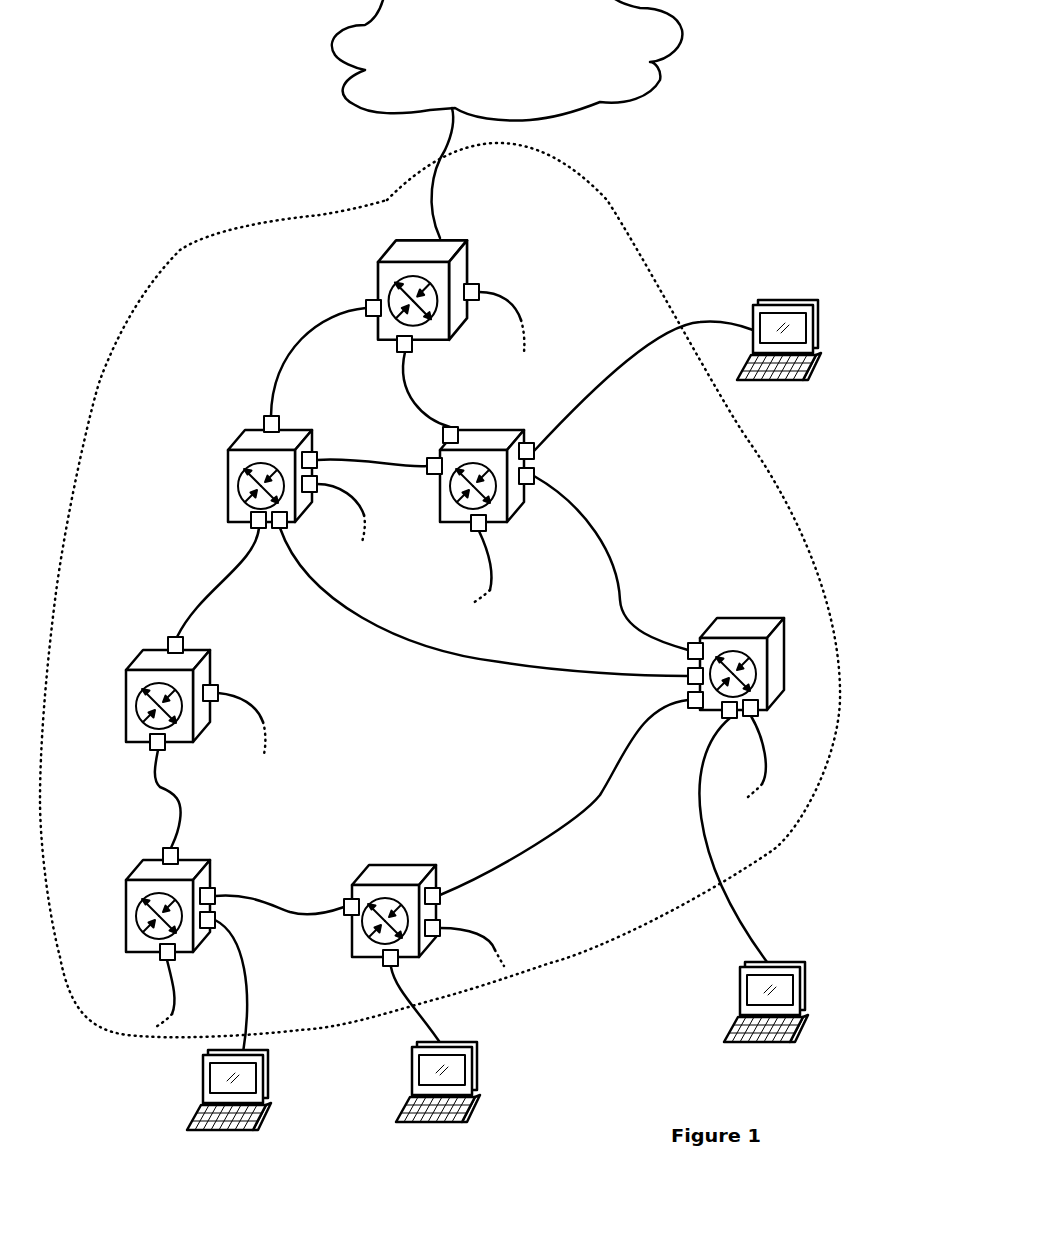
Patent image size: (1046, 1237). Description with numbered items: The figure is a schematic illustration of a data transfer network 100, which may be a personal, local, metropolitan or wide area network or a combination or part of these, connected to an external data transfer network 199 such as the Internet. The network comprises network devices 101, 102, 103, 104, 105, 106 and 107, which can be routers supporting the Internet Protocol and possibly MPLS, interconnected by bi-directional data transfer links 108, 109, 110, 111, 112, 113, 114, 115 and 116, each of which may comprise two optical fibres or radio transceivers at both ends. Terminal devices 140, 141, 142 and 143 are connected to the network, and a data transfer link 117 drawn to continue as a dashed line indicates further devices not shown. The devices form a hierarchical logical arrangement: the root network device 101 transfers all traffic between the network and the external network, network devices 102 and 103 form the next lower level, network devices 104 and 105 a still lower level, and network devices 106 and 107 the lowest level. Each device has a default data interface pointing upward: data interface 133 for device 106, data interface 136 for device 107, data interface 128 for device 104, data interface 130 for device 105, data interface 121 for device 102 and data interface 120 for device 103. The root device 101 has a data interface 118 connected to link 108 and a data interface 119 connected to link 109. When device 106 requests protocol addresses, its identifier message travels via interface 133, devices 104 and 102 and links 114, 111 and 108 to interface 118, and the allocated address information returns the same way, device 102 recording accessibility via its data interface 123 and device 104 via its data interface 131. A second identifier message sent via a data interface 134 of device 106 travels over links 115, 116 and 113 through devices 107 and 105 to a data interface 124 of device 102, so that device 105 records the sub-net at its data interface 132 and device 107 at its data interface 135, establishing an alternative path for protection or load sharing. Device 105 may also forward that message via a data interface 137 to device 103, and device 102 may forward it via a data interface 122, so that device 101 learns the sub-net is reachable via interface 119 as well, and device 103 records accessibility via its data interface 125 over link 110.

The data transfer network 100 is at (640, 212).
The external data transfer network 199 is at (481, 48).
The network device 101 is at (378, 286).
The network device 102 is at (228, 491).
The network device 103 is at (448, 525).
The network device 104 is at (135, 743).
The network device 105 is at (728, 620).
The network device 106 is at (130, 953).
The network device 107 is at (393, 866).
The data transfer link 108 is at (278, 360).
The data transfer link 109 is at (406, 383).
The data transfer link 110 is at (370, 460).
The data transfer link 111 is at (215, 596).
The data transfer link 112 is at (619, 567).
The data transfer link 113 is at (475, 655).
The data transfer link 114 is at (178, 813).
The data transfer link 115 is at (291, 915).
The data transfer link 116 is at (548, 830).
The data transfer link 117 is at (494, 573).
The data interface 118 is at (368, 319).
The data interface 119 is at (397, 346).
The data interface 120 is at (452, 426).
The data interface 121 is at (262, 422).
The data interface 122 is at (316, 457).
The data interface 123 is at (252, 524).
The data interface 124 is at (278, 531).
The data interface 125 is at (427, 475).
The data interface 128 is at (168, 644).
The data interface 130 is at (688, 661).
The data interface 131 is at (172, 751).
The data interface 132 is at (698, 708).
The data interface 133 is at (175, 849).
The data interface 134 is at (215, 891).
The data interface 135 is at (344, 903).
The data interface 136 is at (442, 893).
The data interface 137 is at (695, 641).
The terminal device 140 is at (265, 1079).
The terminal device 141 is at (472, 1069).
The terminal device 142 is at (740, 996).
The terminal device 143 is at (785, 306).